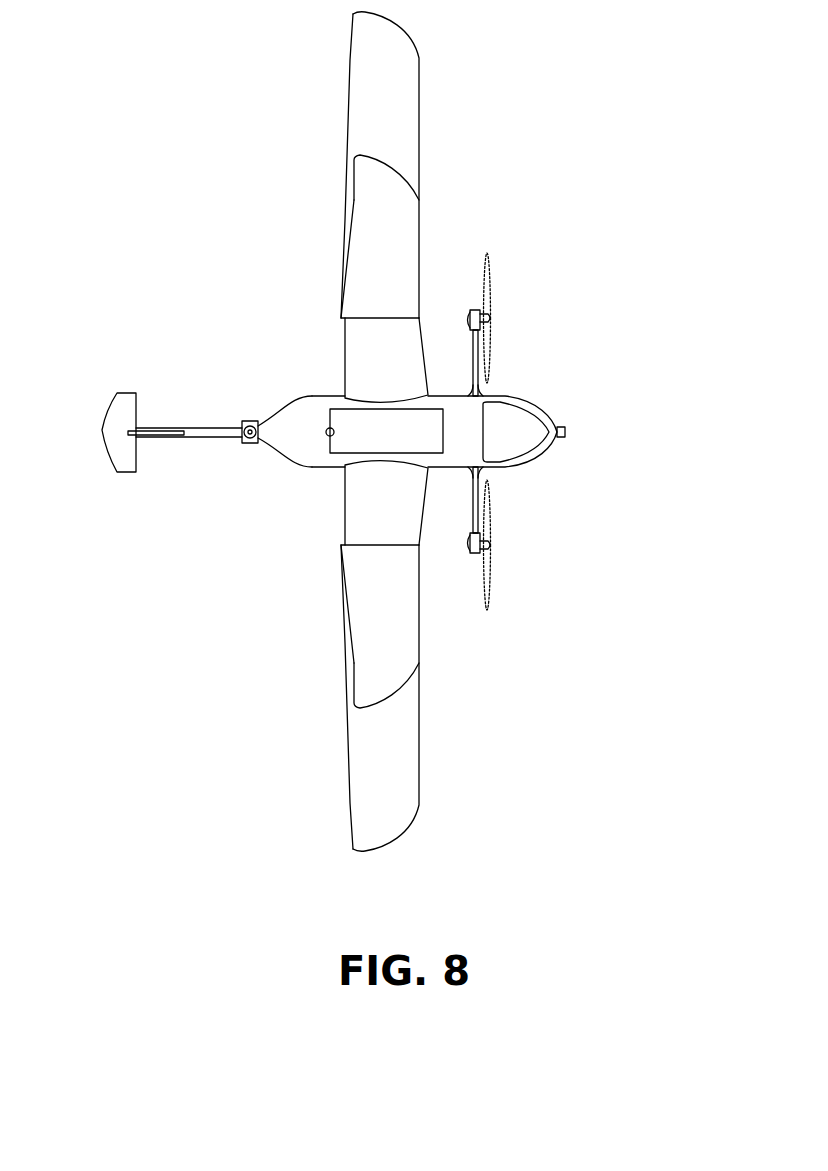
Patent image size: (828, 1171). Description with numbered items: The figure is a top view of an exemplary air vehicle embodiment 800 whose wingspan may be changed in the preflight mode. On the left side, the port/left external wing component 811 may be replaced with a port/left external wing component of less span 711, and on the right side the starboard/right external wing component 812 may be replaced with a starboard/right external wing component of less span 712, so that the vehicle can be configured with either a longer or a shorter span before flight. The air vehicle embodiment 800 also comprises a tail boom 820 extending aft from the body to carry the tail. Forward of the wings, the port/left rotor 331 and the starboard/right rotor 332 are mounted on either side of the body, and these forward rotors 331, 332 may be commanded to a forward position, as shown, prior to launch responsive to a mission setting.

The air vehicle embodiment 800 is at (196, 150).
The port/left external wing component 811 is at (452, 98).
The starboard/right external wing component 812 is at (452, 766).
The port/left external wing component of less span 711 is at (372, 280).
The starboard/right external wing component of less span 712 is at (372, 503).
The tail boom 820 is at (180, 380).
The port/left rotor 331 is at (515, 310).
The starboard/right rotor 332 is at (518, 560).